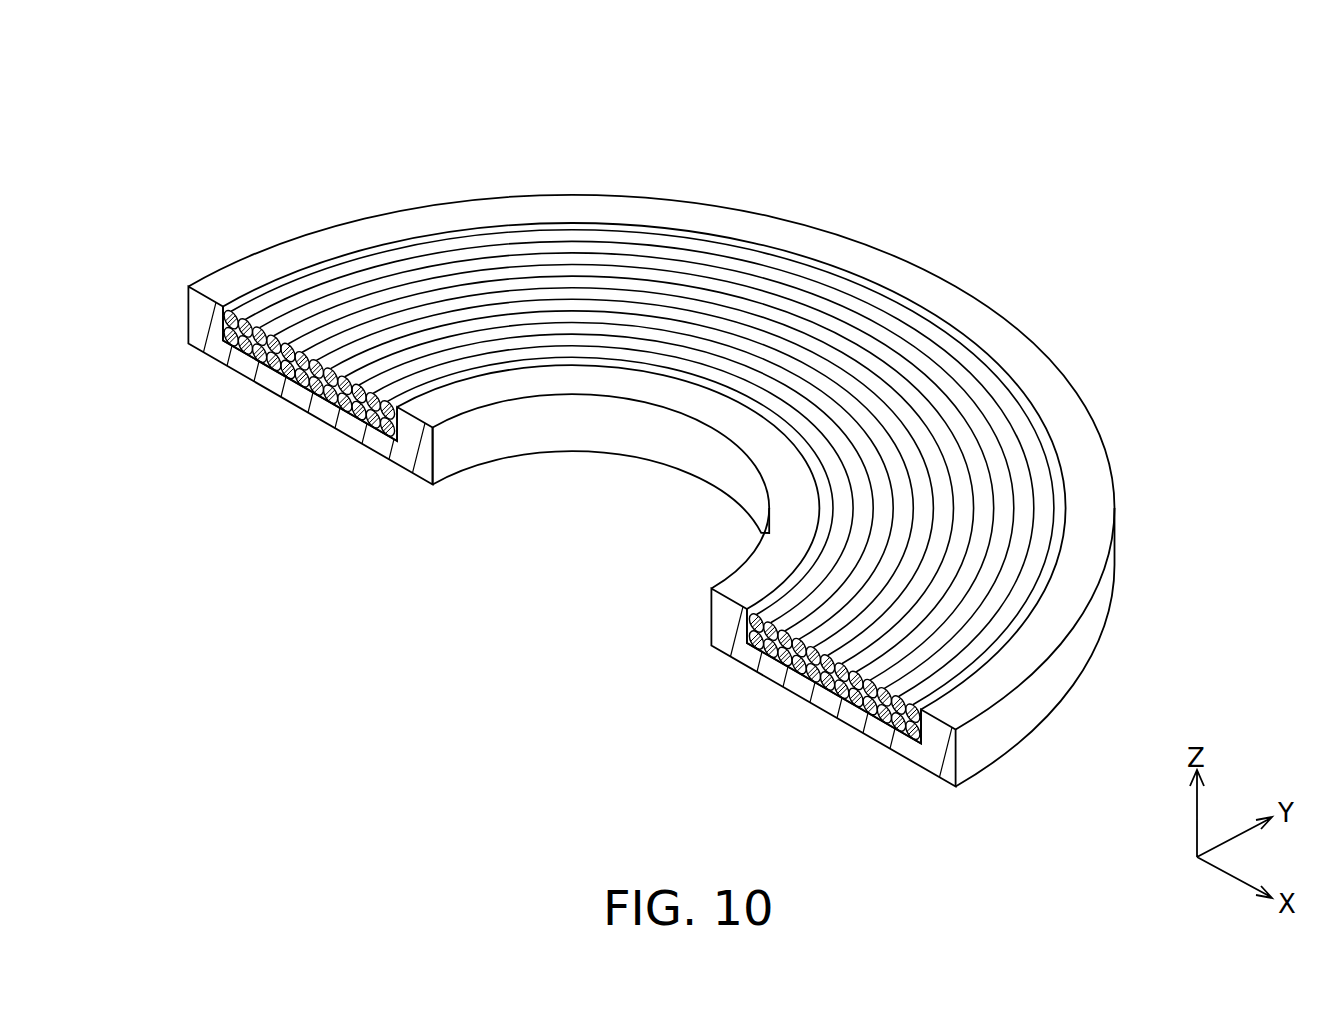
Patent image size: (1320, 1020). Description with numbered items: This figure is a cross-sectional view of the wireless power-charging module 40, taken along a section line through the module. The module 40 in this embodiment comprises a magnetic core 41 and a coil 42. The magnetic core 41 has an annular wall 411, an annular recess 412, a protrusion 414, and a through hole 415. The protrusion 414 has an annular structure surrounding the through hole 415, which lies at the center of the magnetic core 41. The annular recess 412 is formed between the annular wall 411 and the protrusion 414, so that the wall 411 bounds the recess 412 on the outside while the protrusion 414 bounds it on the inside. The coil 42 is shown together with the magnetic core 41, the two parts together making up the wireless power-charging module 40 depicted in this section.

The wireless power-charging module 40 is at (136, 51).
The magnetic core 41 is at (278, 245).
The coil 42 is at (430, 257).
The annular wall 411 is at (1048, 382).
The annular recess 412 is at (1057, 465).
The protrusion 414 is at (743, 420).
The through hole 415 is at (612, 487).